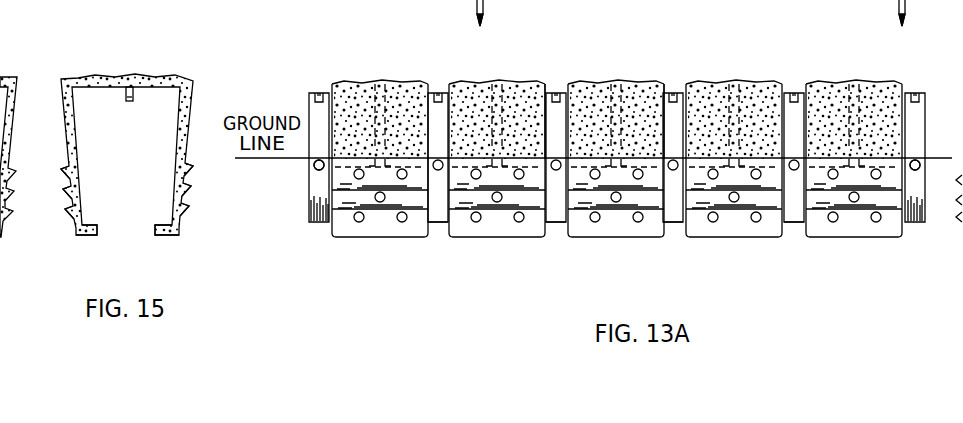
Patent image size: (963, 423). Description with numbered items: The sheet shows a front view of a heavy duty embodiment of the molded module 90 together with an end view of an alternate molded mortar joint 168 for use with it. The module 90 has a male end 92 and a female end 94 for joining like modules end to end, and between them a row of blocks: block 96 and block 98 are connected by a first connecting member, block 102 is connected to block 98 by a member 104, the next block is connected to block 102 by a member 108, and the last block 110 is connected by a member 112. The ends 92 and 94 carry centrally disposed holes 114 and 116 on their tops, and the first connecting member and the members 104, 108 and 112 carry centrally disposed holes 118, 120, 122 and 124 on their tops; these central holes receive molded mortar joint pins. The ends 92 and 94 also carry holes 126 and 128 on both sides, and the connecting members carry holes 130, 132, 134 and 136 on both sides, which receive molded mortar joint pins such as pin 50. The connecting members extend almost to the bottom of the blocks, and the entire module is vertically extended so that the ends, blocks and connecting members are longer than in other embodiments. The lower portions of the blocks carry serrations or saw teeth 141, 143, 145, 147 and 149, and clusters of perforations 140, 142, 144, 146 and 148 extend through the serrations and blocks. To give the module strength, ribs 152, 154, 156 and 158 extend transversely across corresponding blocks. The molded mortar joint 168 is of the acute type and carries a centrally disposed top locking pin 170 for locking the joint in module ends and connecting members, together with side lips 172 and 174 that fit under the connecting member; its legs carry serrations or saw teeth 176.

In FIG. 13A, the pin 50 is at (377, 100).
In FIG. 13A, the molded module 90 is at (364, 72).
In FIG. 13A, the male end 92 is at (313, 224).
In FIG. 13A, the female end 94 is at (915, 228).
In FIG. 13A, the block 96 is at (342, 82).
In FIG. 13A, the block 98 is at (470, 81).
In FIG. 13A, the block 102 is at (593, 82).
In FIG. 13A, the member 104 is at (550, 92).
In FIG. 13A, the member 108 is at (672, 93).
In FIG. 13A, the block 110 is at (827, 82).
In FIG. 13A, the member 112 is at (786, 92).
In FIG. 13A, the centrally disposed hole 114 is at (312, 92).
In FIG. 13A, the centrally disposed hole 116 is at (915, 93).
In FIG. 13A, the centrally disposed hole 118 is at (444, 93).
In FIG. 13A, the centrally disposed hole 120 is at (556, 93).
In FIG. 13A, the centrally disposed hole 122 is at (678, 93).
In FIG. 13A, the centrally disposed hole 124 is at (799, 93).
In FIG. 13A, the hole 126 is at (314, 166).
In FIG. 13A, the hole 128 is at (920, 175).
In FIG. 13A, the hole 130 is at (435, 222).
In FIG. 13A, the hole 132 is at (555, 223).
In FIG. 13A, the hole 134 is at (677, 222).
In FIG. 13A, the hole 136 is at (793, 222).
In FIG. 13A, the cluster of perforations 140 is at (378, 221).
In FIG. 13A, the serrations 141 is at (333, 228).
In FIG. 13A, the cluster of perforations 142 is at (495, 221).
In FIG. 13A, the serrations 143 is at (513, 213).
In FIG. 13A, the cluster of perforations 144 is at (623, 222).
In FIG. 13A, the serrations 145 is at (590, 212).
In FIG. 13A, the cluster of perforations 146 is at (732, 221).
In FIG. 13A, the serrations 147 is at (765, 212).
In FIG. 13A, the cluster of perforations 148 is at (865, 221).
In FIG. 13A, the serrations 149 is at (825, 212).
In FIG. 13A, the rib 152 is at (493, 99).
In FIG. 13A, the rib 154 is at (626, 100).
In FIG. 13A, the rib 156 is at (730, 98).
In FIG. 13A, the rib 158 is at (860, 105).
In FIG. 15, the molded mortar joint 168 is at (197, 55).
In FIG. 15, the centrally disposed top locking pin 170 is at (130, 102).
In FIG. 15, the side lip 172 is at (92, 238).
In FIG. 15, the side lip 174 is at (168, 238).
In FIG. 15, the serrations 176 is at (64, 170).